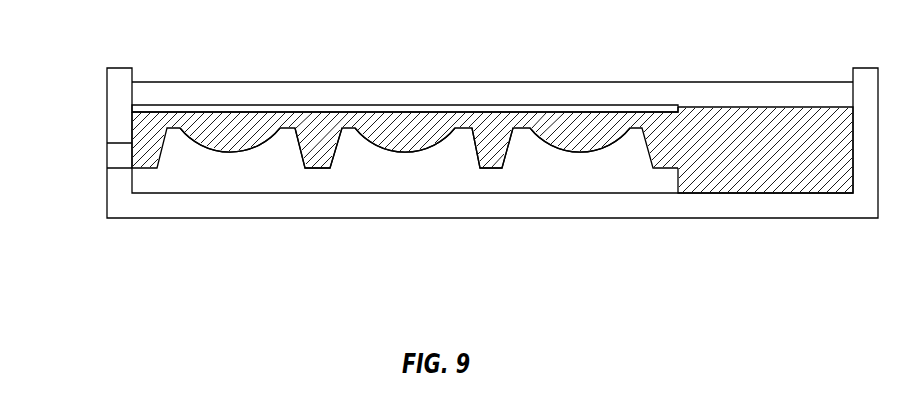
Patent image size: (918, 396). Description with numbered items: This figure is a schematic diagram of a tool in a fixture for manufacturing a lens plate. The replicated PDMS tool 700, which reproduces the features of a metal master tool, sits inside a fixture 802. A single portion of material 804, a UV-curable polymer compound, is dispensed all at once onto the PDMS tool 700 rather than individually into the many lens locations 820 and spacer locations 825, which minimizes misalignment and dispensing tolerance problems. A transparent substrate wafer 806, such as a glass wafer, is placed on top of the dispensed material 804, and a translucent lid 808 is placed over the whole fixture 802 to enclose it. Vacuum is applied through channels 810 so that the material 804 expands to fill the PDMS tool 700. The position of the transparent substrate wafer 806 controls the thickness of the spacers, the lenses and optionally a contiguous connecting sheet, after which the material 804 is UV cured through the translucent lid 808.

The PDMS tool 700 is at (240, 183).
The fixture 802 is at (247, 207).
The material 804 is at (772, 123).
The transparent substrate wafer 806 is at (402, 110).
The translucent lid 808 is at (667, 97).
The channels 810 is at (119, 154).
The lens locations 820 is at (226, 131).
The spacer locations 825 is at (320, 130).